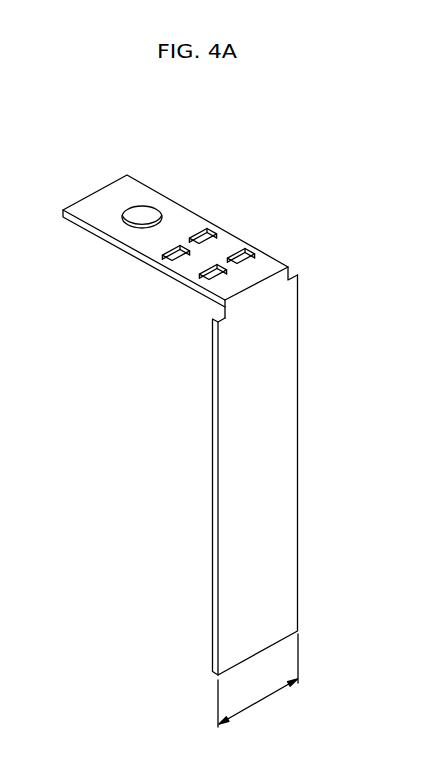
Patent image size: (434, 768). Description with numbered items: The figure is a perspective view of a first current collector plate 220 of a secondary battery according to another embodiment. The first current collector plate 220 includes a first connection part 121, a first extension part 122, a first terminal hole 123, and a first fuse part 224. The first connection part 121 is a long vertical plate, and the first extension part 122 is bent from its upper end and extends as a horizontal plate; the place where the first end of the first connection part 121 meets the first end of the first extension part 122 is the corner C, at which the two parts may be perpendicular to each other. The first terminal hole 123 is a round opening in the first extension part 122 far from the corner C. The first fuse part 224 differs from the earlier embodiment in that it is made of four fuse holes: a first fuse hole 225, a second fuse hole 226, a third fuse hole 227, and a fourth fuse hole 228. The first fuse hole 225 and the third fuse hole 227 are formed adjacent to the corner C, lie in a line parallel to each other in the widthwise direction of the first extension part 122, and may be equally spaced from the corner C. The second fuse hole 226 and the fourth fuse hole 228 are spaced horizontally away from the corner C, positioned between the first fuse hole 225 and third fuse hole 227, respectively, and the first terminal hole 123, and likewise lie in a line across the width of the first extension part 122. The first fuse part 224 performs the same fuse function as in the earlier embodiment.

The first current collector plate 220 is at (57, 104).
The first connection part 121 is at (284, 404).
The first extension part 122 is at (175, 215).
The first terminal hole 123 is at (139, 214).
The first fuse part 224 is at (366, 208).
The first fuse hole 225 is at (217, 235).
The second fuse hole 226 is at (177, 248).
The third fuse hole 227 is at (241, 251).
The fourth fuse hole 228 is at (210, 268).
The corner C is at (257, 283).